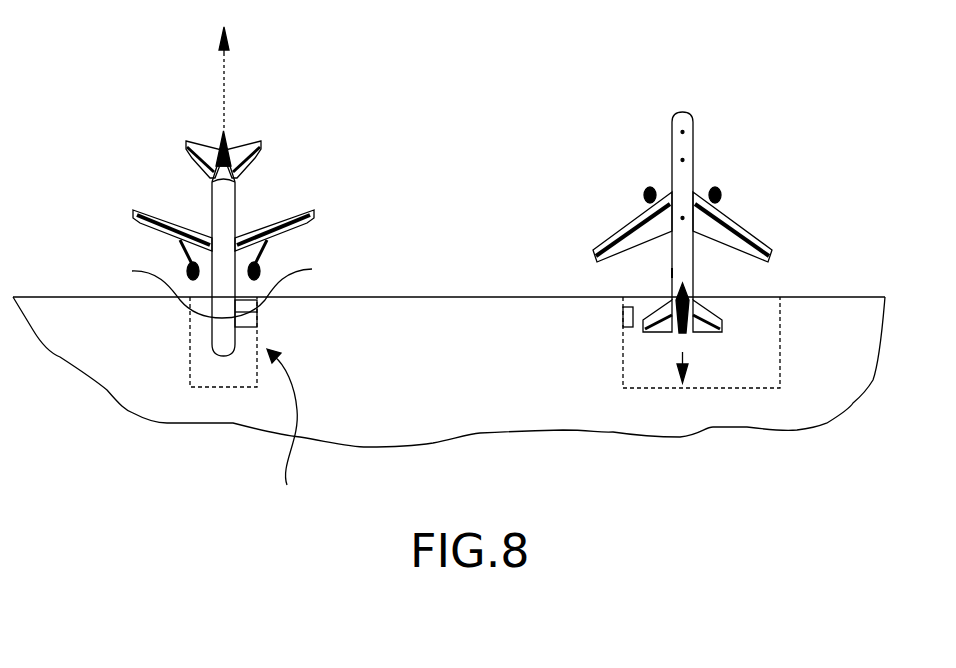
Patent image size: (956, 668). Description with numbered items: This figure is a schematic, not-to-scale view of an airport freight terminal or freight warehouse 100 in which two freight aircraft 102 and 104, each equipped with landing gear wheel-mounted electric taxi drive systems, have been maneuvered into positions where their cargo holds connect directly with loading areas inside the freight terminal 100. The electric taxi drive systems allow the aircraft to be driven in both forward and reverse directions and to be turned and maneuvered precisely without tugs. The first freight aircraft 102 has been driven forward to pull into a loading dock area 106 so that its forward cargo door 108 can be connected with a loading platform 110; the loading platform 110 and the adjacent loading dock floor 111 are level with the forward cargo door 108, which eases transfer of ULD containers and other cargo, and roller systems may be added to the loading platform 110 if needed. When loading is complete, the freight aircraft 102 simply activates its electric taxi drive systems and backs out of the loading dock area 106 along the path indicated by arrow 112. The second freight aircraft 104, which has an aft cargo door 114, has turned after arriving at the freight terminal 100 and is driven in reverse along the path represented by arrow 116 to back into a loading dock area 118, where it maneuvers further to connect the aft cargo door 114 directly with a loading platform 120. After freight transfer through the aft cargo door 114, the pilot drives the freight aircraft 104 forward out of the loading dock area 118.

The freight terminal 100 is at (447, 383).
The freight aircraft 102 is at (148, 169).
The freight aircraft 104 is at (763, 206).
The loading dock area 106 is at (205, 358).
The forward cargo door 108 is at (201, 287).
The loading platform 110 is at (297, 291).
The loading dock floor 111 is at (288, 431).
The arrow 112 is at (224, 80).
The aft cargo door 114 is at (672, 272).
The arrow 116 is at (680, 343).
The loading dock area 118 is at (647, 362).
The loading platform 120 is at (623, 318).